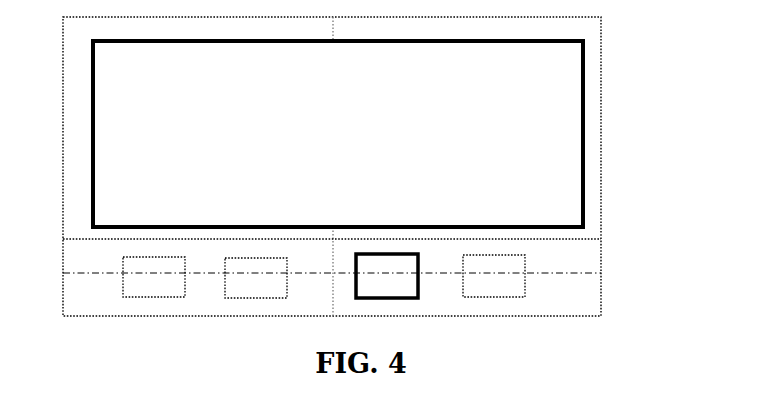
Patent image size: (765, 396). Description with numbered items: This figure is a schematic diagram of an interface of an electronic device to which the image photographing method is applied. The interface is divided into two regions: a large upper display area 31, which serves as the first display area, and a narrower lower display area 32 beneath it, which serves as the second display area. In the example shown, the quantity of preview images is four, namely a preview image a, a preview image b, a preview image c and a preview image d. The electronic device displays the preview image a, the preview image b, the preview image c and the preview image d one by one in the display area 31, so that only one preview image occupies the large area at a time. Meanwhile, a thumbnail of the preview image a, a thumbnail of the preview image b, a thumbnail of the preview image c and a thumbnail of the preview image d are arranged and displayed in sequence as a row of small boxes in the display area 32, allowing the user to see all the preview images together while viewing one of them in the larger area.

The display area 31 is at (592, 170).
The display area 32 is at (356, 268).
The preview image a is at (154, 277).
The preview image b is at (256, 278).
The preview image c is at (387, 276).
The preview image d is at (494, 276).